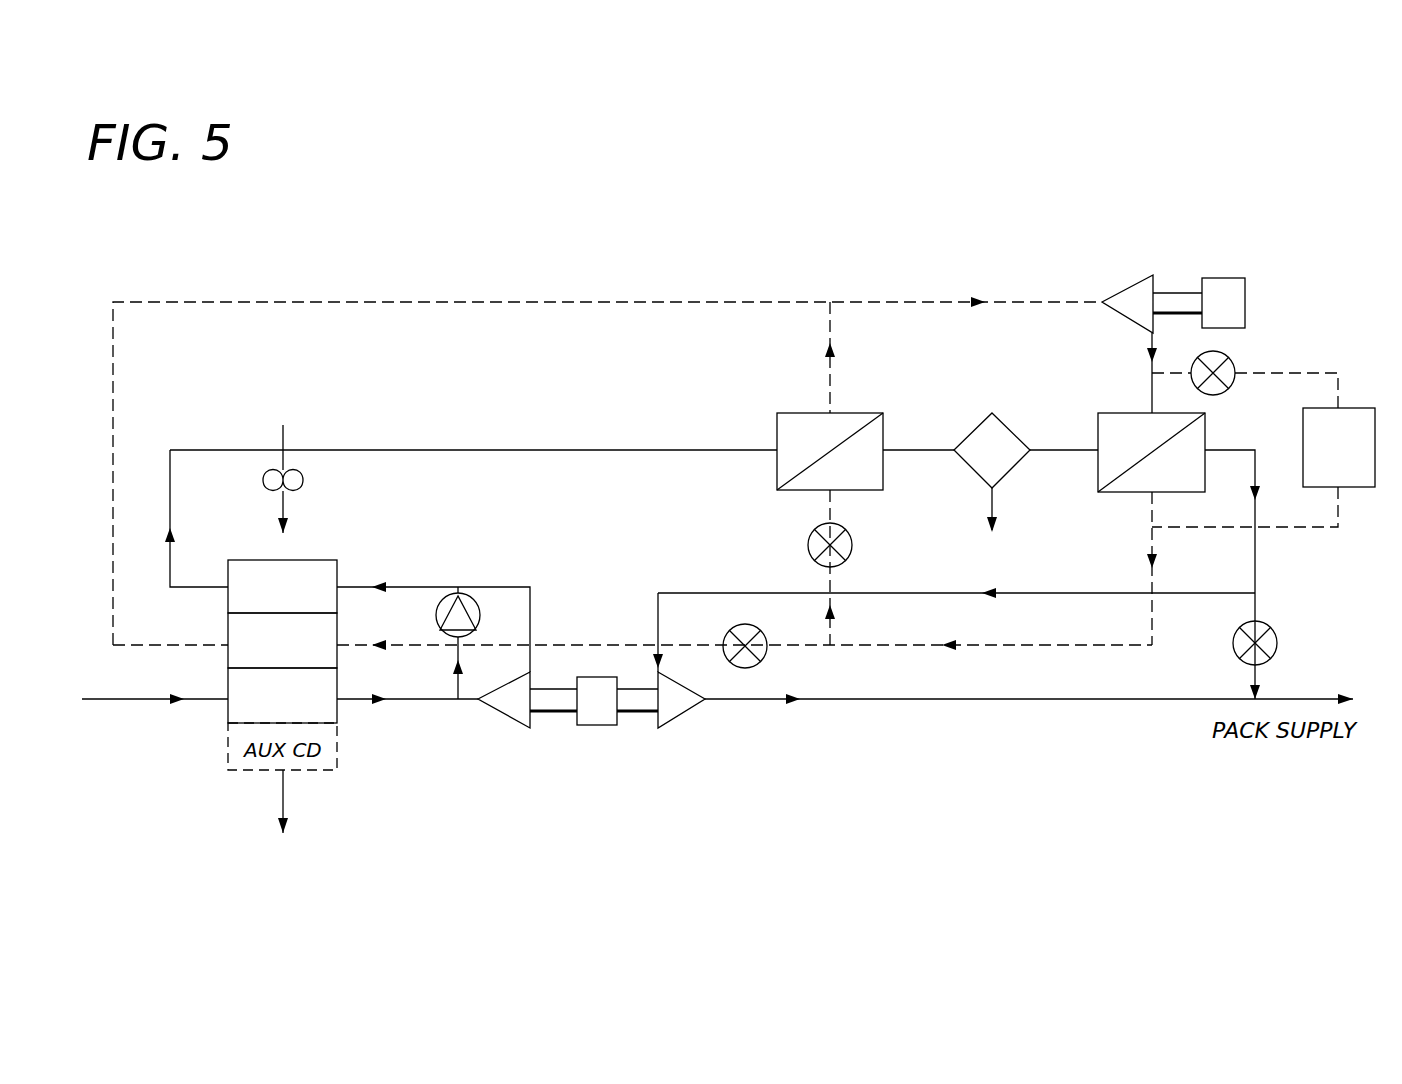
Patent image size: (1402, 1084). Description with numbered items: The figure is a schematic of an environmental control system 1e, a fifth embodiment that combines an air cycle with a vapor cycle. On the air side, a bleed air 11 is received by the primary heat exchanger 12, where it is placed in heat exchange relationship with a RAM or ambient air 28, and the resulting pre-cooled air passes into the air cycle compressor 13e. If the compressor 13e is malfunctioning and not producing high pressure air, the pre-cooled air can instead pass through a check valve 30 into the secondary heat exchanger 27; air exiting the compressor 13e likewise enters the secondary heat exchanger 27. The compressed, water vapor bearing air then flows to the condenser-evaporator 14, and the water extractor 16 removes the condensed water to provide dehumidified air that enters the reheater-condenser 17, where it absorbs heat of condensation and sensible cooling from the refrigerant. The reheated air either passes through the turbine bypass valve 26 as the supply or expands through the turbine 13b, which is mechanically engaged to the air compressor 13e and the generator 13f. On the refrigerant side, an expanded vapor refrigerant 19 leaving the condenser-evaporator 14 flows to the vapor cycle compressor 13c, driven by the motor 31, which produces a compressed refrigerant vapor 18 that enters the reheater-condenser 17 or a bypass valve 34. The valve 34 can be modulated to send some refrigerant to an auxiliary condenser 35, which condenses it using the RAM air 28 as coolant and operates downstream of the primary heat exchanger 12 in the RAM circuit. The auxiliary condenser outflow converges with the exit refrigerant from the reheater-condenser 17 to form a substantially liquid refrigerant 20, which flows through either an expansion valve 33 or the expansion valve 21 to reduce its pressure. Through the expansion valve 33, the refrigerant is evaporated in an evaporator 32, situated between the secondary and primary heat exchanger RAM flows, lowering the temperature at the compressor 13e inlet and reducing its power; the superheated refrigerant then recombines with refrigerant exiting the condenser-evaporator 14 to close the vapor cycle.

The environmental control system 1e is at (986, 264).
The bleed air 11 is at (100, 698).
The primary heat exchanger 12 is at (228, 708).
The turbine 13b is at (670, 728).
The vapor cycle compressor 13c is at (1128, 284).
The air cycle compressor 13e is at (505, 734).
The generator 13f is at (598, 725).
The condenser-evaporator heat exchanger 14 is at (777, 430).
The water extractor 16 is at (1022, 437).
The reheater-condenser heat exchanger 17 is at (1137, 492).
The compressed refrigerant vapor 18 is at (1150, 343).
The expanded vapor refrigerant 19 is at (883, 302).
The refrigerant 20 is at (1153, 540).
The expansion valve 21 is at (850, 545).
The turbine bypass valve 26 is at (1278, 650).
The secondary heat exchanger 27 is at (337, 567).
The RAM air 28 is at (288, 455).
The check valve 30 is at (470, 600).
The motor 31 is at (1245, 299).
The evaporator 32 is at (228, 656).
The expansion valve 33 is at (763, 660).
The bypass valve 34 is at (1230, 361).
The auxiliary condenser 35 is at (1360, 408).